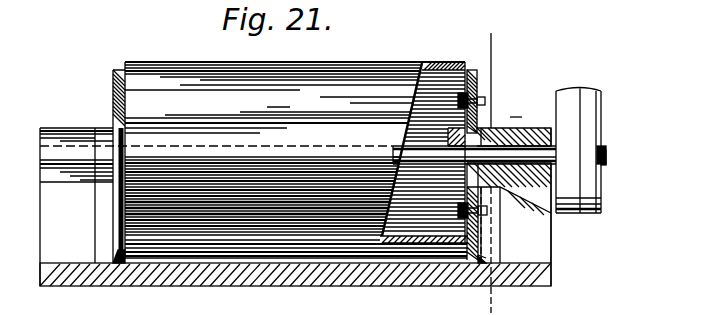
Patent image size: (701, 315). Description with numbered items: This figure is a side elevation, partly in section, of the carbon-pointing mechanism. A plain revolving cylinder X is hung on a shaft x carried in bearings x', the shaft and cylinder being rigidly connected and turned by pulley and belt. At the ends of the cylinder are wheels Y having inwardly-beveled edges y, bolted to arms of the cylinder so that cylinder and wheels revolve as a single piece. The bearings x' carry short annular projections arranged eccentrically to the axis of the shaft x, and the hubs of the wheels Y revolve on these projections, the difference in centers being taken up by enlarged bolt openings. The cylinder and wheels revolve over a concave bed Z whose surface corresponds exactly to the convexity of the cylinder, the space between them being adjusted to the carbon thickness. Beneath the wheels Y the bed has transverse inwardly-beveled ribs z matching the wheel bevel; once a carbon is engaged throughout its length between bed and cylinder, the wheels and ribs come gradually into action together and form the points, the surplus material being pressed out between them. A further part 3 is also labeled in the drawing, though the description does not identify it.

The revolving cylinder X is at (290, 162).
The bearings x' is at (323, 192).
The shaft x is at (408, 163).
The inwardly-beveled edges y is at (472, 73).
The wheels Y is at (478, 128).
The concave bed Z is at (326, 273).
The inwardly-beveled ribs z is at (113, 260).
The foot block 3 is at (486, 260).